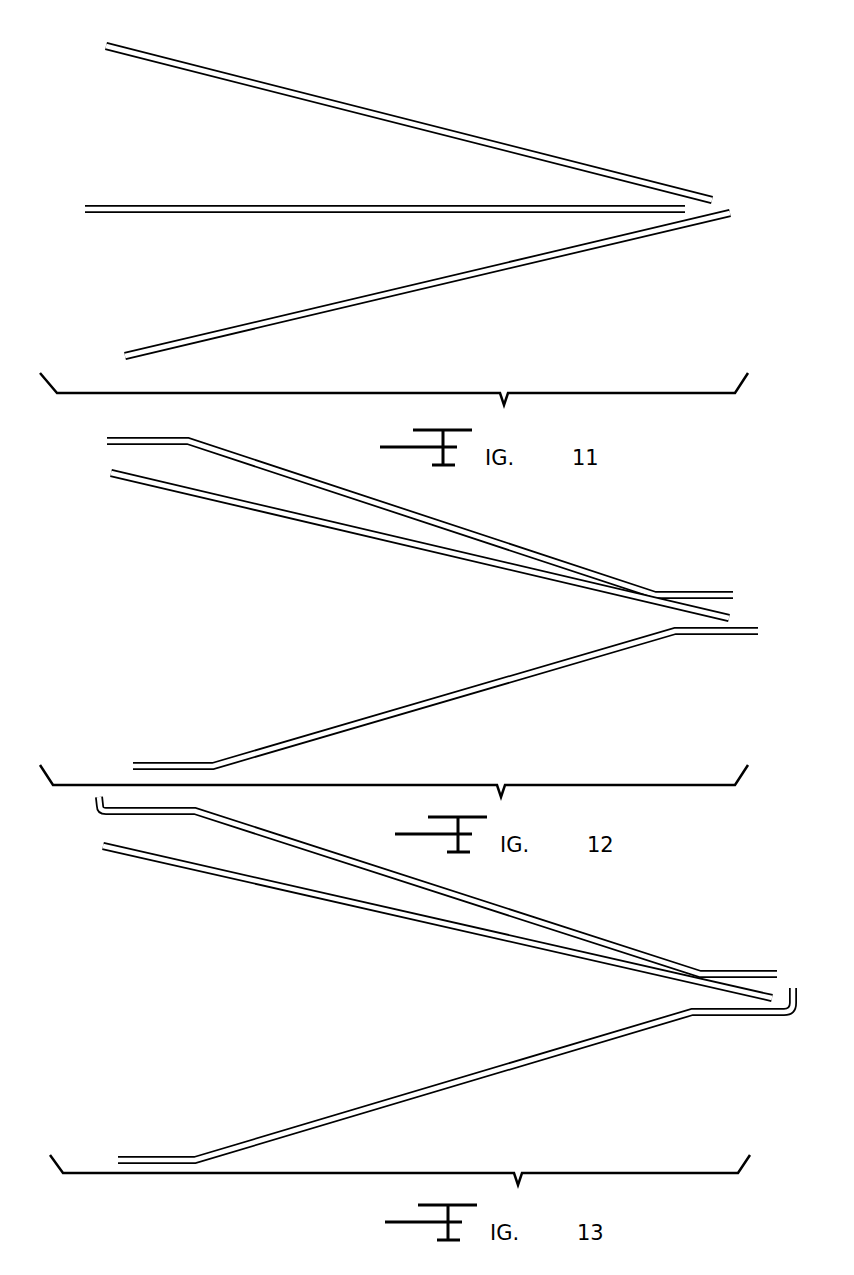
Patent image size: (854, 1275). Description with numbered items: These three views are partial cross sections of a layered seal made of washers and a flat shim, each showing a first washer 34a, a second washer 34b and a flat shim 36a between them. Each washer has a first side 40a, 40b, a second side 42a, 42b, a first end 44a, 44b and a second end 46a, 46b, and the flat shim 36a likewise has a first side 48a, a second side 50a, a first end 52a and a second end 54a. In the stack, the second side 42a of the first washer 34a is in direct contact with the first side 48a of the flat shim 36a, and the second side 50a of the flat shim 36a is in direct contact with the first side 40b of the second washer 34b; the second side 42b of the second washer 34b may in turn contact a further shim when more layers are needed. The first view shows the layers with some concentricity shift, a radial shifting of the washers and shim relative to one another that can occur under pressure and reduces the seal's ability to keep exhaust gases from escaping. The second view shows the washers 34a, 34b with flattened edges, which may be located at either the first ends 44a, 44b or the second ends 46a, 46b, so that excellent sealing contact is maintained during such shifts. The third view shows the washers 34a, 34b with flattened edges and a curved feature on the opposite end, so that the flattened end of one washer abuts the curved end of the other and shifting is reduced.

In FIG. 11, the first washer 34a is at (485, 276).
In FIG. 12, the first washer 34a is at (500, 685).
In FIG. 13, the first washer 34a is at (481, 1079).
In FIG. 11, the second washer 34b is at (390, 115).
In FIG. 12, the second washer 34b is at (474, 530).
In FIG. 13, the second washer 34b is at (492, 905).
In FIG. 11, the flat shim 36a is at (172, 213).
In FIG. 12, the flat shim 36a is at (222, 504).
In FIG. 13, the flat shim 36a is at (212, 873).
In FIG. 11, the first side of the first washer 40a is at (416, 290).
In FIG. 12, the first side of the first washer 40a is at (423, 708).
In FIG. 13, the first side of the first washer 40a is at (429, 1093).
In FIG. 11, the first side of the second washer 40b is at (258, 90).
In FIG. 12, the first side of the second washer 40b is at (250, 464).
In FIG. 13, the first side of the second washer 40b is at (247, 828).
In FIG. 11, the second side of the first washer 42a is at (290, 313).
In FIG. 12, the second side of the first washer 42a is at (317, 731).
In FIG. 13, the second side of the first washer 42a is at (335, 1112).
In FIG. 11, the second side of the second washer 42b is at (310, 88).
In FIG. 12, the second side of the second washer 42b is at (346, 489).
In FIG. 13, the second side of the second washer 42b is at (225, 822).
In FIG. 11, the first end of the first washer 44a is at (146, 353).
In FIG. 12, the first end of the first washer 44a is at (170, 763).
In FIG. 13, the first end of the first washer 44a is at (136, 1157).
In FIG. 11, the first end of the second washer 44b is at (118, 45).
In FIG. 12, the first end of the second washer 44b is at (145, 437).
In FIG. 13, the first end of the second washer 44b is at (100, 811).
In FIG. 11, the second end of the first washer 46a is at (714, 220).
In FIG. 12, the second end of the first washer 46a is at (709, 635).
In FIG. 13, the second end of the first washer 46a is at (745, 1016).
In FIG. 11, the second end of the second washer 46b is at (692, 194).
In FIG. 12, the second end of the second washer 46b is at (696, 591).
In FIG. 13, the second end of the second washer 46b is at (733, 968).
In FIG. 11, the first side of the flat shim 48a is at (343, 213).
In FIG. 12, the first side of the flat shim 48a is at (407, 545).
In FIG. 13, the first side of the flat shim 48a is at (382, 912).
In FIG. 11, the second side of the flat shim 50a is at (228, 206).
In FIG. 12, the second side of the flat shim 50a is at (300, 506).
In FIG. 13, the second side of the flat shim 50a is at (303, 886).
In FIG. 11, the first end of the flat shim 52a is at (82, 210).
In FIG. 12, the first end of the flat shim 52a is at (108, 478).
In FIG. 13, the first end of the flat shim 52a is at (110, 850).
In FIG. 11, the second end of the flat shim 54a is at (672, 204).
In FIG. 12, the second end of the flat shim 54a is at (724, 615).
In FIG. 13, the second end of the flat shim 54a is at (768, 992).